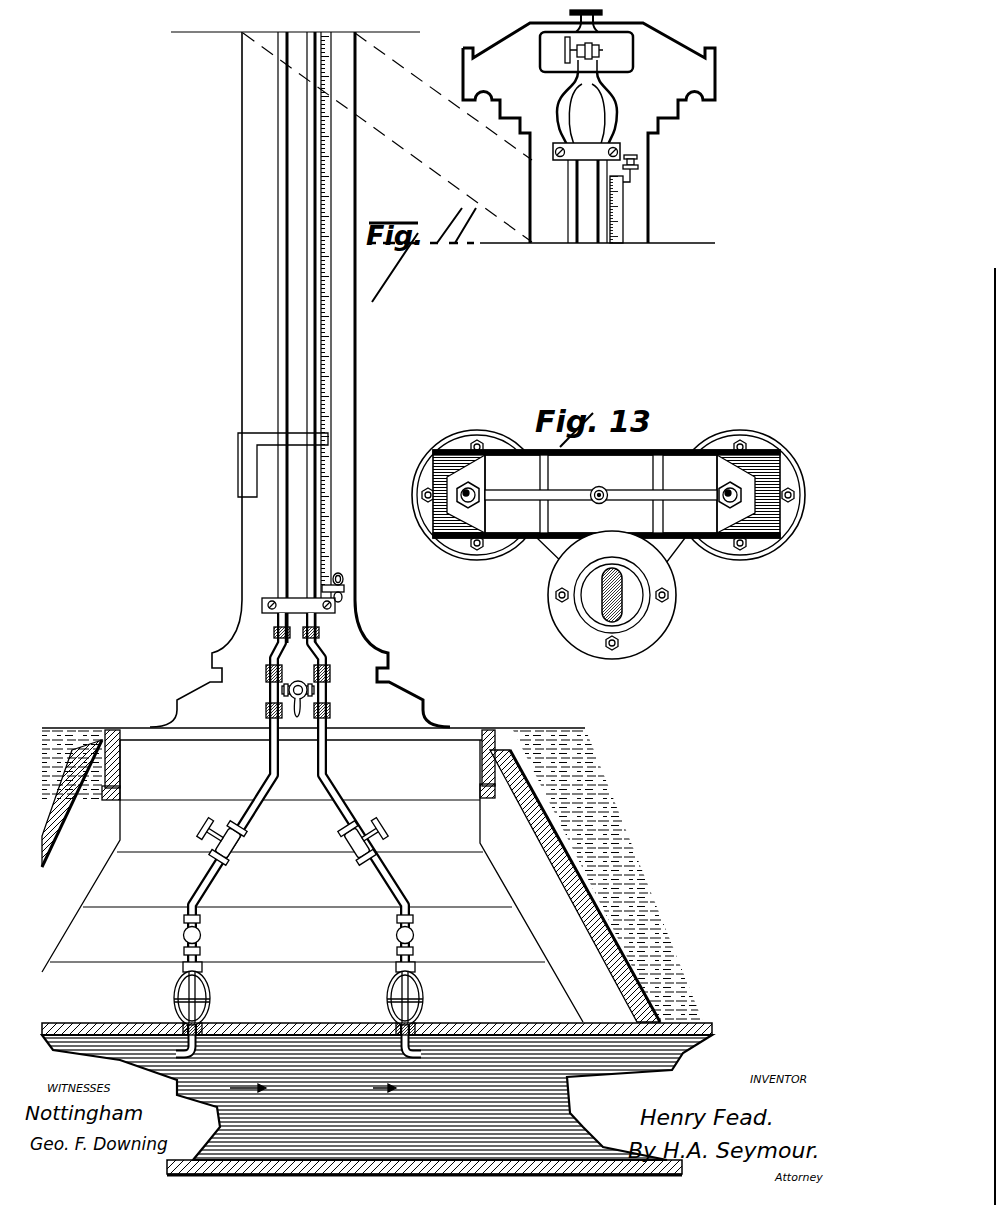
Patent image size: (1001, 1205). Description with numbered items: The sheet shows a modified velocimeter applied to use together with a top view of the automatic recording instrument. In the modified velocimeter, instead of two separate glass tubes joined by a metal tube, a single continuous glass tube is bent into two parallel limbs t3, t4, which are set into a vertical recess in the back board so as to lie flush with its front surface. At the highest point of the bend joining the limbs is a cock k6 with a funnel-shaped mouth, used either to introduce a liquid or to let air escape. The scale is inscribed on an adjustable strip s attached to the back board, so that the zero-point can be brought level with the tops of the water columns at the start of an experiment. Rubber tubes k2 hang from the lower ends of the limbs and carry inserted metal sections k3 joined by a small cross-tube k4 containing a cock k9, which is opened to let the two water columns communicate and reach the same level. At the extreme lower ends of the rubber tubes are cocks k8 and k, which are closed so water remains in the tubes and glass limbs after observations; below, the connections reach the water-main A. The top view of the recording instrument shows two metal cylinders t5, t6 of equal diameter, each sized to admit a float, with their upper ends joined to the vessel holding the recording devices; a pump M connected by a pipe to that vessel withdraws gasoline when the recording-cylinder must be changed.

In FIG. 11, the limb of glass tube t3 is at (300, 379).
In FIG. 11, the limb of glass tube t4 is at (312, 395).
In FIG. 11, the adjustable strip s is at (340, 332).
In FIG. 11, the pipe k2 is at (328, 766).
In FIG. 11, the coupling k3 is at (330, 691).
In FIG. 11, the valve handle k4 is at (292, 735).
In FIG. 11, the cock k9 is at (298, 680).
In FIG. 11, the cock k8 is at (228, 837).
In FIG. 11, the stop valve k is at (365, 837).
In FIG. 11, the cock k6 is at (593, 50).
In FIG. 11, the water channel A is at (377, 1097).
In FIG. 13, the metal cylinder t5 is at (740, 507).
In FIG. 13, the metal cylinder t6 is at (477, 509).
In FIG. 13, the pump M is at (612, 602).